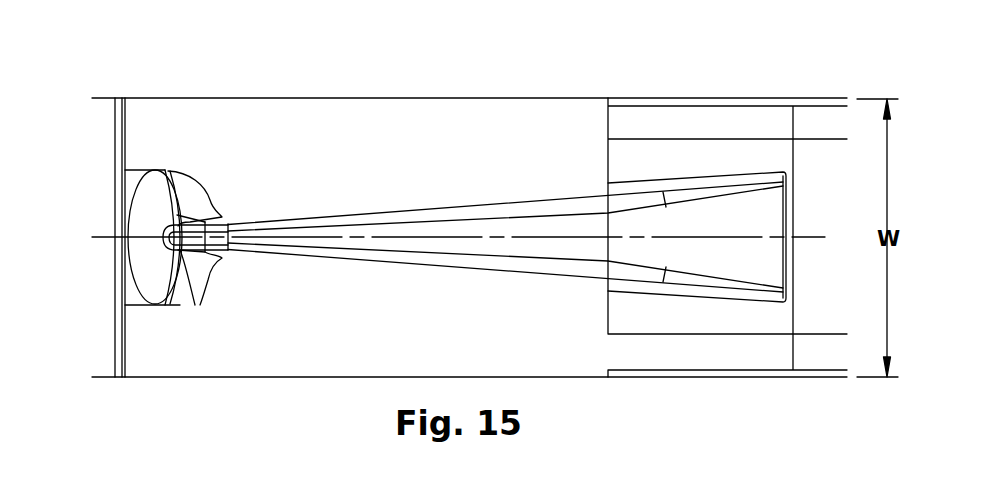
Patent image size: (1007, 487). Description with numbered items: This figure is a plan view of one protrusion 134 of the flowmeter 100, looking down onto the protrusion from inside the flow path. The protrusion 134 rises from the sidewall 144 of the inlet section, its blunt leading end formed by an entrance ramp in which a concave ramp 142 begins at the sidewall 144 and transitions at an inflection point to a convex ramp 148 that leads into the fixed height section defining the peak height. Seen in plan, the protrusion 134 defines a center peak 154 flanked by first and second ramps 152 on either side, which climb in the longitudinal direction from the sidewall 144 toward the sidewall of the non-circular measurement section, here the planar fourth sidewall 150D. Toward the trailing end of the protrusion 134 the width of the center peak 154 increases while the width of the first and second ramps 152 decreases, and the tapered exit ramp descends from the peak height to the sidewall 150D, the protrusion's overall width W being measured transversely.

The propulsion system 100 is at (350, 80).
The protrusion 134 is at (277, 167).
The concave ramp 142 is at (142, 218).
The sidewall 144 is at (135, 183).
The convex ramp 148 is at (198, 262).
The fourth sidewall 150D is at (815, 158).
The first and second ramps 152 is at (503, 165).
The center peak 154 is at (398, 232).